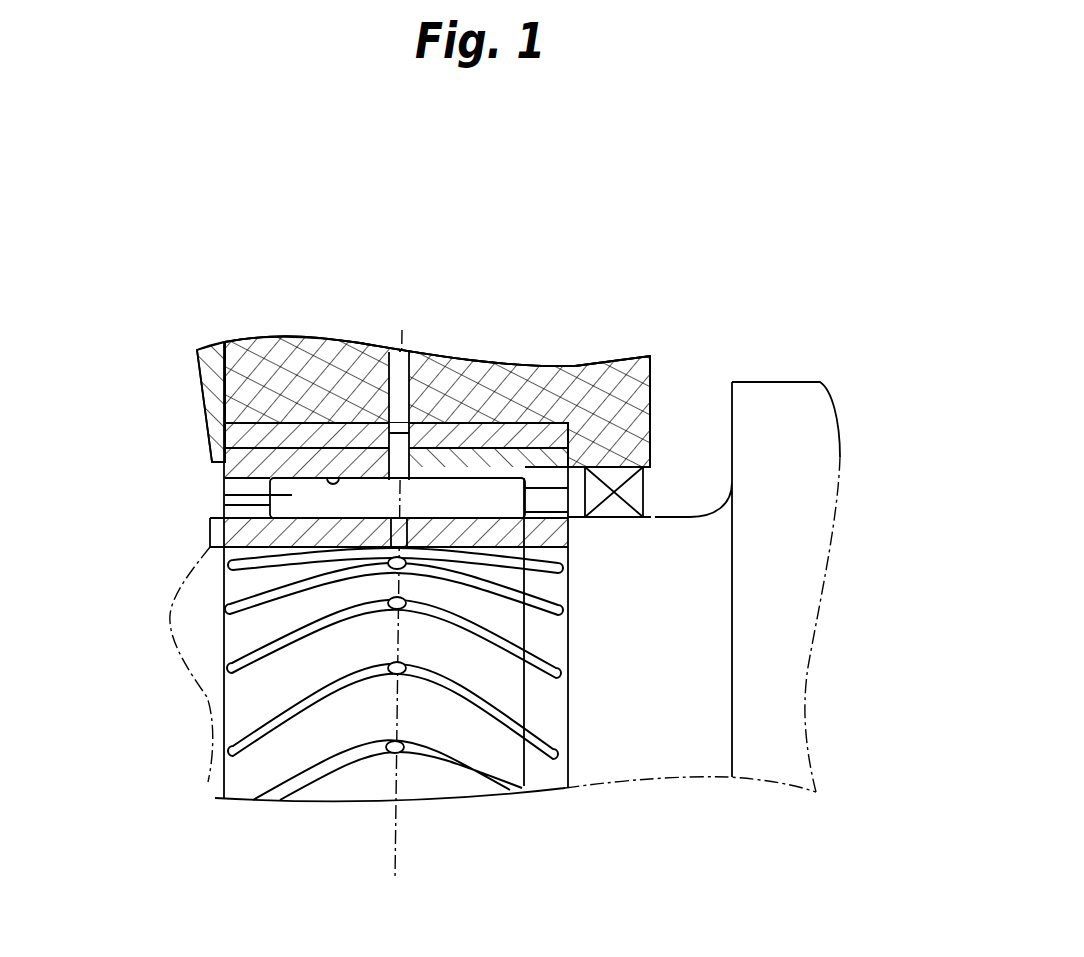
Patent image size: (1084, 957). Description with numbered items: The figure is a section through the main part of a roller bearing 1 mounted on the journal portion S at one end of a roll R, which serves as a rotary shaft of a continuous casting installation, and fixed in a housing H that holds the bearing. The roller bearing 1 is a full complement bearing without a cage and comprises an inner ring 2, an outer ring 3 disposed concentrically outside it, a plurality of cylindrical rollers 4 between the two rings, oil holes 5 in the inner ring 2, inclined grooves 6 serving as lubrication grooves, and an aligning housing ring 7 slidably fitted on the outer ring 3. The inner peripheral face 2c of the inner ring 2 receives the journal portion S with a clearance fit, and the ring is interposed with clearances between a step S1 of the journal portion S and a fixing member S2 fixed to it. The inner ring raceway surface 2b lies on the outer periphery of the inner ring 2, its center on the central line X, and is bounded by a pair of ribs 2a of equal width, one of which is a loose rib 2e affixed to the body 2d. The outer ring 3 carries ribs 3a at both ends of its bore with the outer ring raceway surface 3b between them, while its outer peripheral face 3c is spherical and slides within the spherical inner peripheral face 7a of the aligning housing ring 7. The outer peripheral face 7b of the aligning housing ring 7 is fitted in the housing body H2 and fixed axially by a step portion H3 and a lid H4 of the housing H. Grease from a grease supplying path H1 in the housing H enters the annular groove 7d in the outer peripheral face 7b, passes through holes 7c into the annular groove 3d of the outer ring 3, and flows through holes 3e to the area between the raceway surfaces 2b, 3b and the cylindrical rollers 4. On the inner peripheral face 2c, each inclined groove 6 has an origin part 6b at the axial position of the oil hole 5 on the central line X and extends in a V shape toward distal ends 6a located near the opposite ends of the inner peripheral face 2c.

The roller bearing 1 is at (545, 415).
The inner ring 2 is at (211, 504).
The ribs 2a is at (308, 546).
The inner ring raceway surface 2b is at (229, 603).
The inner peripheral face 2c is at (300, 590).
The body 2d is at (285, 518).
The loose rib 2e is at (565, 623).
The outer ring 3 is at (224, 478).
The ribs 3a is at (225, 443).
The outer ring raceway surface 3b is at (328, 423).
The outer peripheral face 3c is at (338, 473).
The annular groove 3d is at (505, 432).
The holes 3e is at (386, 423).
The cylindrical rollers 4 is at (224, 508).
The oil holes 5 is at (396, 757).
The inclined grooves 6 is at (565, 693).
The distal ends 6a is at (240, 746).
The origin part 6b is at (396, 682).
The aligning housing ring 7 is at (263, 352).
The inner peripheral face 7a is at (572, 400).
The outer peripheral face 7b is at (290, 422).
The holes 7c is at (452, 424).
The annular groove 7d is at (440, 395).
The housing H is at (590, 400).
The grease supplying path H1 is at (420, 346).
The housing body H2 is at (275, 360).
The step portion H3 is at (590, 447).
The lid H4 is at (214, 355).
The roll R is at (782, 421).
The journal portion S is at (208, 782).
The step S1 is at (587, 533).
The fixing member S2 is at (210, 533).
The central line X is at (393, 880).